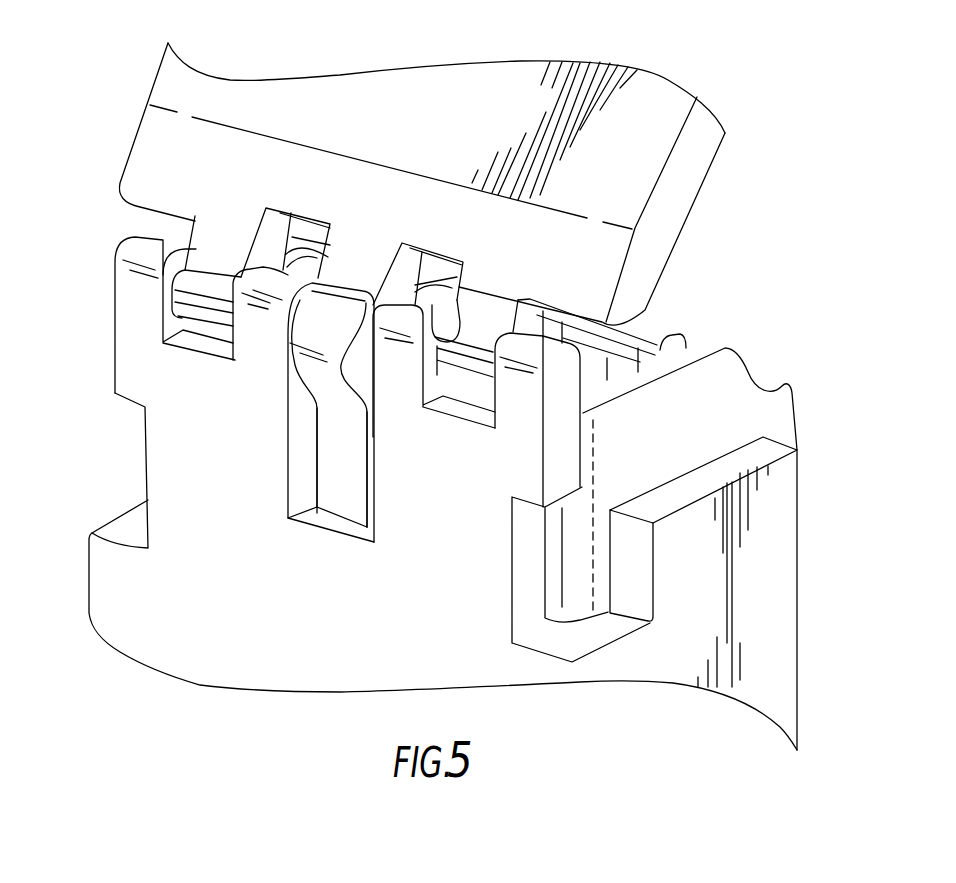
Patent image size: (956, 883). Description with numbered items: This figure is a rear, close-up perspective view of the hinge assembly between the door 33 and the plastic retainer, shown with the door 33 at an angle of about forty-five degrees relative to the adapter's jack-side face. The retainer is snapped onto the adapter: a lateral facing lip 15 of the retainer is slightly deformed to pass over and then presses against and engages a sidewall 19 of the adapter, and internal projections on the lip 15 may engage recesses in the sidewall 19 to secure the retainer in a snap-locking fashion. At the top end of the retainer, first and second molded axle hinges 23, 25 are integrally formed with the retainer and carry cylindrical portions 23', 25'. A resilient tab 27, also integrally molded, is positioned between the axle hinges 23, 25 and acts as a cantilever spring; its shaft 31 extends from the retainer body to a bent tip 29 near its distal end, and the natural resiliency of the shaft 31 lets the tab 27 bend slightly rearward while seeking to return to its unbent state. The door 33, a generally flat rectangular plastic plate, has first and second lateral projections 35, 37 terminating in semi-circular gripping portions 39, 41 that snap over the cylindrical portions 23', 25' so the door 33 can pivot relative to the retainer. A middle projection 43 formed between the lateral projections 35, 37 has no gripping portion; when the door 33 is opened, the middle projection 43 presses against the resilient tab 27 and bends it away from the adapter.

The first lateral facing lip 15 is at (787, 620).
The sidewall of the adapter 19 is at (645, 443).
The first axle hinge 23 is at (476, 406).
The cylindrical portion of the first axle hinge 23' is at (534, 486).
The second axle hinge 25 is at (201, 315).
The cylindrical portion of the second axle hinge 25' is at (128, 309).
The resilient tab 27 is at (336, 428).
The bent tip 29 is at (305, 331).
The shaft 31 is at (327, 500).
The door 33 is at (439, 146).
The first lateral projection 35 is at (474, 326).
The second lateral projection 37 is at (213, 247).
The gripping portion 39 is at (470, 362).
The gripping portion 41 is at (208, 322).
The middle projection 43 is at (347, 273).